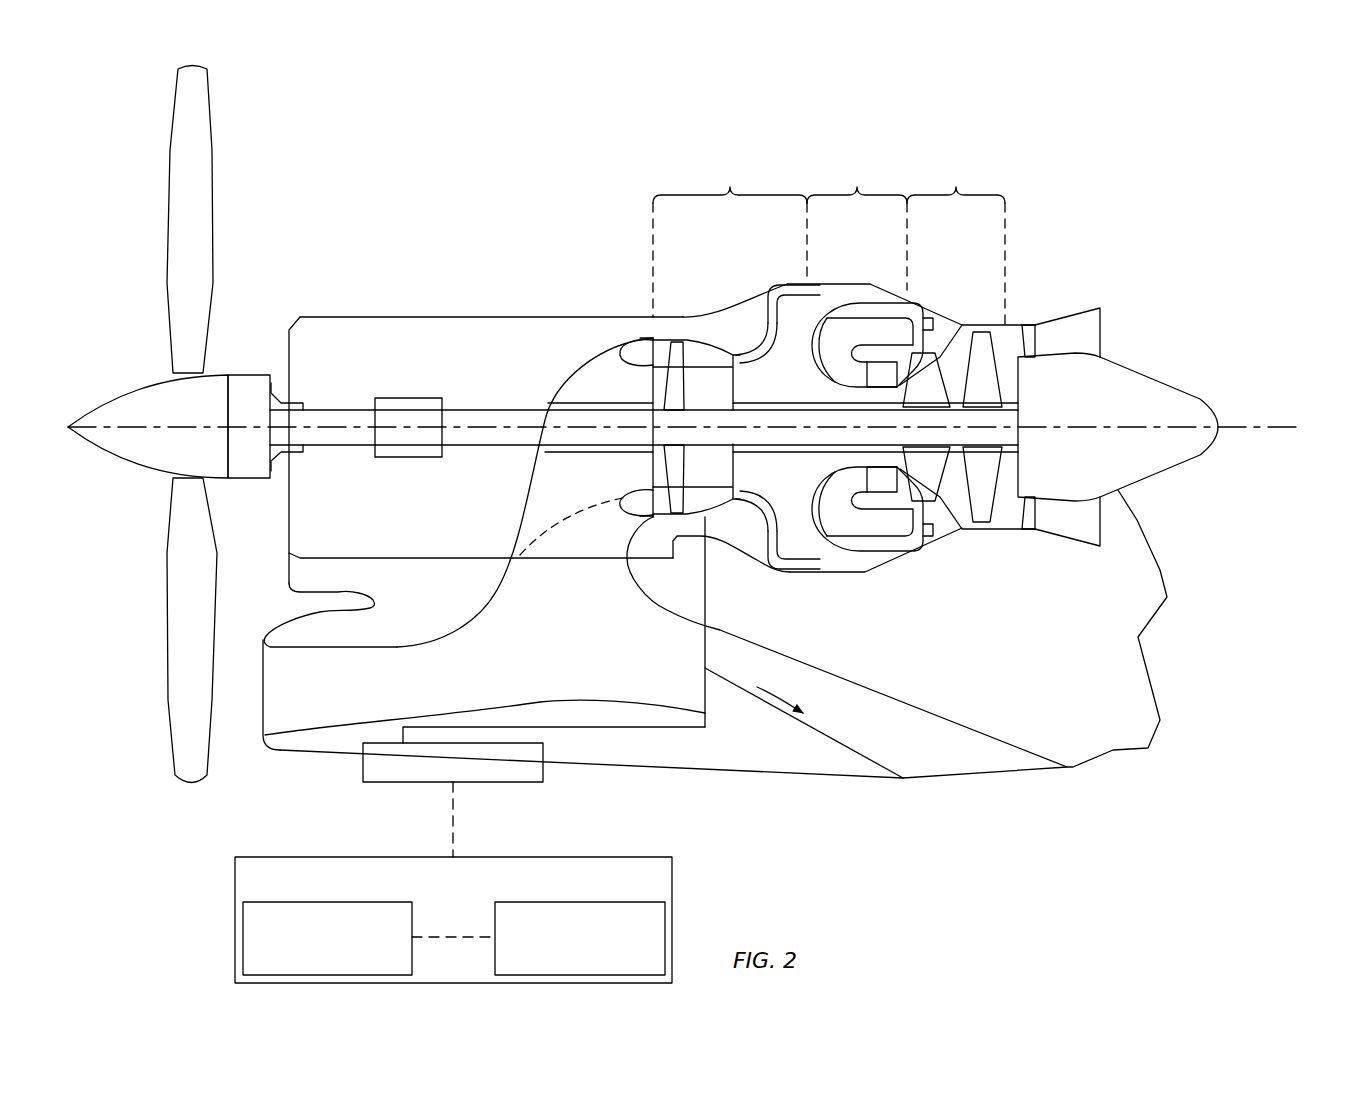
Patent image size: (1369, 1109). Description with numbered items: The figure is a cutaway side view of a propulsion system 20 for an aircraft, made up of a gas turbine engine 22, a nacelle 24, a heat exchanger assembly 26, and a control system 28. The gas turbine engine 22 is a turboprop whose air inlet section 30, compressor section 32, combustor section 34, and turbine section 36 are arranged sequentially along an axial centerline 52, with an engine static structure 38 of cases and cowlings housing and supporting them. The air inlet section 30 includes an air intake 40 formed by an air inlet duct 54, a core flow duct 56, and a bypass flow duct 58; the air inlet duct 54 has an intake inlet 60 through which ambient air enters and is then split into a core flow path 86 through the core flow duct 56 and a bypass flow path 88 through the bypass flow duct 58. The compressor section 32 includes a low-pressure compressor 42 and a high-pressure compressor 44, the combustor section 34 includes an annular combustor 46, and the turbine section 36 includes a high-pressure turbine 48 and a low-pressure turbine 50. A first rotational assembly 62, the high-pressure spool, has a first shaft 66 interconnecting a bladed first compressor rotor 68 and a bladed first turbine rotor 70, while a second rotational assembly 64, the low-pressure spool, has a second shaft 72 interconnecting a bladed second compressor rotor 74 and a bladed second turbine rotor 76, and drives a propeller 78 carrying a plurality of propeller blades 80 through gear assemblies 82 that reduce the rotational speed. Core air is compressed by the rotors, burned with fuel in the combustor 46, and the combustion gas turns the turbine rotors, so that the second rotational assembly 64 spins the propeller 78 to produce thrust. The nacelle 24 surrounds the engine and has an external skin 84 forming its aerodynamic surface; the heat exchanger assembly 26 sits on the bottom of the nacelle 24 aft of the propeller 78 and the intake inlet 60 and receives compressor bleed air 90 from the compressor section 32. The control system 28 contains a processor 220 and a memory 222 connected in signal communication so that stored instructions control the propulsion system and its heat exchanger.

The propulsion system 20 is at (1196, 249).
The gas turbine engine 22 is at (1237, 340).
The nacelle 24 is at (852, 790).
The heat exchanger assembly 26 is at (523, 783).
The control system 28 is at (568, 887).
The air inlet section 30 is at (300, 772).
The compressor section 32 is at (730, 235).
The combustor section 34 is at (857, 218).
The turbine section 36 is at (956, 239).
The engine static structure 38 is at (873, 572).
The air intake 40 is at (357, 702).
The low-pressure compressor 42 is at (640, 356).
The high-pressure compressor 44 is at (748, 534).
The annular combustor 46 is at (857, 537).
The high-pressure turbine 48 is at (952, 505).
The low-pressure turbine 50 is at (1008, 512).
The axial centerline 52 is at (1296, 434).
The air inlet duct 54 is at (397, 691).
The core flow duct 56 is at (627, 505).
The bypass flow duct 58 is at (820, 731).
The intake inlet 60 is at (262, 690).
The first rotational assembly 62 is at (810, 383).
The second rotational assembly 64 is at (492, 462).
The first shaft 66 is at (820, 452).
The bladed first compressor rotor 68 is at (740, 355).
The bladed first turbine rotor 70 is at (928, 367).
The second shaft 72 is at (494, 420).
The bladed second compressor rotor 74 is at (684, 340).
The bladed second turbine rotor 76 is at (990, 467).
The propeller 78 is at (118, 386).
The propeller blades 80 is at (188, 219).
The gear assemblies 82 is at (405, 458).
The external skin 84 is at (693, 768).
The core flow path 86 is at (632, 502).
The bypass flow path 88 is at (748, 690).
The compressor bleed air 90 is at (615, 728).
The processor 220 is at (308, 965).
The memory 222 is at (560, 965).